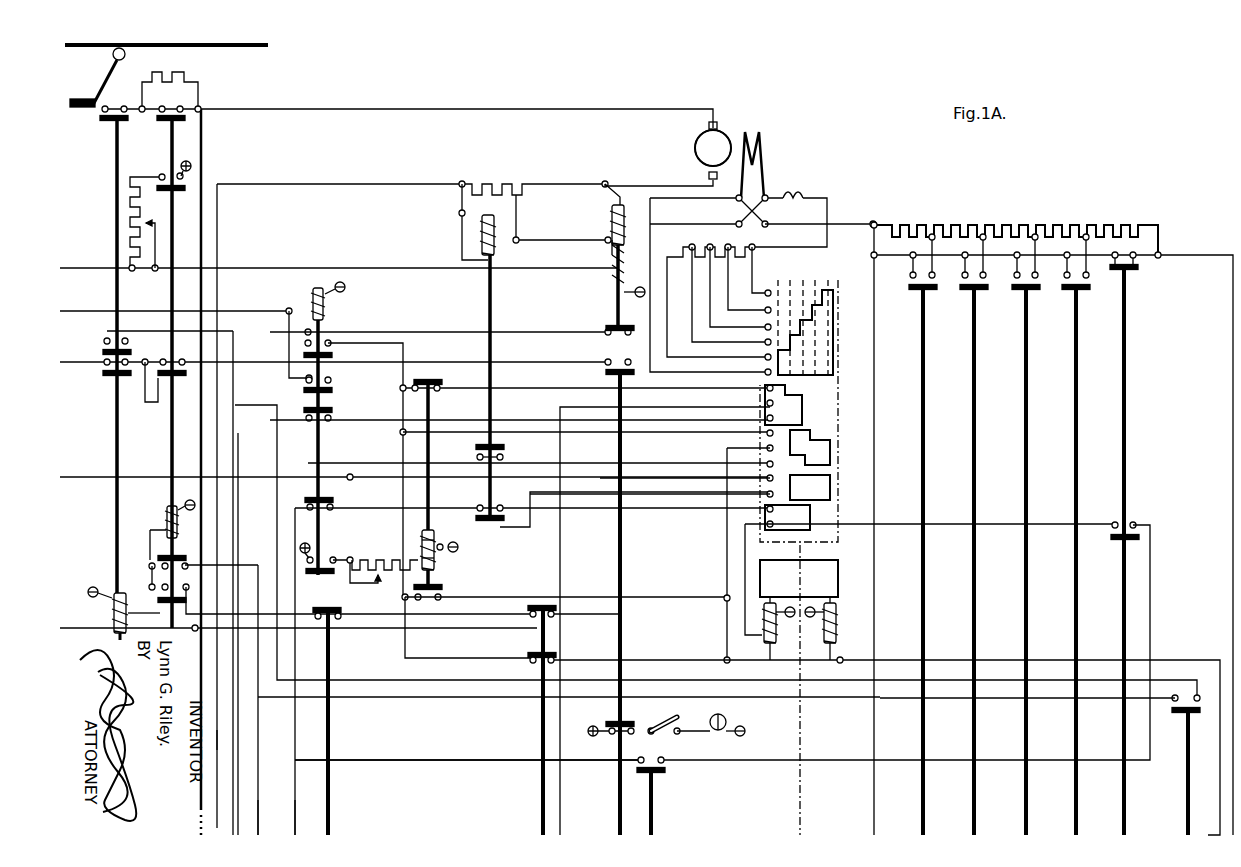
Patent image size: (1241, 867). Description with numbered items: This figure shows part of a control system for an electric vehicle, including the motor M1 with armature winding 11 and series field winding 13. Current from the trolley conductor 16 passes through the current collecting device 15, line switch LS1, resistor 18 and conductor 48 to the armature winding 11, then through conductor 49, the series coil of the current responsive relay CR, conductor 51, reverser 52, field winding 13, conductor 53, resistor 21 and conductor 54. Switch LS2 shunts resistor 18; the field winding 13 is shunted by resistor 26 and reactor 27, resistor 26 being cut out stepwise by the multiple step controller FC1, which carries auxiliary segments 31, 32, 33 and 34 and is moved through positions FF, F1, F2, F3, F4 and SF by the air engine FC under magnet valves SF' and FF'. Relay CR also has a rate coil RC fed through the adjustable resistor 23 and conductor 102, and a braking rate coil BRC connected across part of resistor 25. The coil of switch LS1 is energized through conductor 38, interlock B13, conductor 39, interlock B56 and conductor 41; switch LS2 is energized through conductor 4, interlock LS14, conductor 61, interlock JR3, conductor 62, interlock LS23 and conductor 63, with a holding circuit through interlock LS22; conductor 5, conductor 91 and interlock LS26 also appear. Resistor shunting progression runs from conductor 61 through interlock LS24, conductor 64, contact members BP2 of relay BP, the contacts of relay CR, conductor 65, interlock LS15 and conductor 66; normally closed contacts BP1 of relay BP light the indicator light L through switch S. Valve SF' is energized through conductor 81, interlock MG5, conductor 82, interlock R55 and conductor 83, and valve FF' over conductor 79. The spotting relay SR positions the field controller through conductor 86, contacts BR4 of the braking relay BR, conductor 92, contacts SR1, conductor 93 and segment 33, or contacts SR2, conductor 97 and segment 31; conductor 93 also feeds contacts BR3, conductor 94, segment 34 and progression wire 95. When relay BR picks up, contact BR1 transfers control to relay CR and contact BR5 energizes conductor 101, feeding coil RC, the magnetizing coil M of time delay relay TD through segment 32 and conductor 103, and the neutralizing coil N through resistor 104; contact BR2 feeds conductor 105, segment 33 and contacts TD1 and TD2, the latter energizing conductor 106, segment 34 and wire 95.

The pivoted arm 15 is at (106, 74).
The track bar 16 is at (228, 48).
The coil 18 is at (186, 84).
The conductor 48 is at (456, 110).
The motor 11 is at (695, 147).
The horn 13 is at (765, 150).
The conductor 49 is at (662, 180).
The coil 25 is at (485, 184).
The coil 26 is at (688, 246).
The coil 27 is at (793, 197).
The conductor 51 is at (696, 220).
The switch 52 is at (745, 214).
The conductor 53 is at (818, 234).
The coil 21 is at (1006, 228).
The conductor 54 is at (1228, 427).
The conductor 102 is at (100, 268).
The conductor 5 is at (99, 310).
The conductor 4 is at (94, 362).
The conductor 64 is at (248, 362).
The conductor 61 is at (246, 402).
The conductor 66 is at (238, 433).
The conductor 101 is at (104, 476).
The coil 23 is at (142, 222).
The conductor 105 is at (403, 361).
The conductor 106 is at (537, 389).
The conductor 65 is at (564, 330).
The conductor 94 is at (474, 418).
The conductor 95 is at (560, 408).
The conductor 93 is at (472, 464).
The conductor 92 is at (387, 506).
The coil 104 is at (370, 560).
The conductor 39 is at (457, 614).
The conductor 38 is at (68, 607).
The conductor 82 is at (784, 756).
The conductor 62 is at (442, 698).
The conductor 81 is at (258, 814).
The conductor 86 is at (296, 814).
The conductor 91 is at (222, 740).
The conductor 63 is at (146, 551).
The conductor 41 is at (164, 610).
The contact 34 is at (802, 413).
The contact 33 is at (830, 445).
The contact 32 is at (830, 478).
The contact 31 is at (810, 516).
The conductor 79 is at (727, 554).
The conductor 97 is at (722, 510).
The conductor 103 is at (665, 490).
The conductor 83 is at (1064, 524).
The limit switch coil LS1 is at (104, 378).
The limit switch coil LS2 is at (170, 142).
The limit switch contact LS26 is at (184, 190).
The limit switch contact LS15 is at (100, 342).
The limit switch contact LS14 is at (108, 380).
The limit switch contact LS24 is at (160, 402).
The limit switch contact LS23 is at (148, 557).
The limit switch contact LS22 is at (336, 619).
The relay BR is at (356, 321).
The relay contact BR1 is at (332, 390).
The relay contact BR2 is at (332, 356).
The relay contact BR3 is at (332, 410).
The relay contact BR4 is at (312, 500).
The relay contact BR5 is at (318, 568).
The time delay relay TD is at (482, 574).
The relay contact TD1 is at (442, 588).
The relay contact TD2 is at (436, 383).
The coil tap M is at (422, 540).
The coil tap N is at (422, 558).
The relay SR is at (482, 301).
The relay contact SR1 is at (504, 447).
The relay contact SR2 is at (494, 528).
The relay CR is at (598, 221).
The relay coil BRC is at (612, 250).
The relay coil RC is at (612, 293).
The relay contact BP2 is at (612, 380).
The conductor BP is at (654, 639).
The relay contact BP1 is at (626, 722).
The switch S is at (680, 720).
The lamp L is at (726, 720).
The contact MG5 is at (661, 771).
The motor M1 is at (762, 117).
The flow controller contacts FC1 is at (872, 393).
The flow controller air engine FC is at (870, 583).
The coil SF' is at (765, 592).
The coil FF' is at (837, 628).
The contact FF is at (767, 316).
The contact F1 is at (780, 315).
The contact F2 is at (793, 315).
The contact F3 is at (806, 315).
The contact F4 is at (818, 315).
The contact SF is at (800, 399).
The relay contact R55 is at (1160, 518).
The relay contact JR3 is at (1178, 722).
The relay contact B56 is at (333, 609).
The relay contact B13 is at (556, 614).